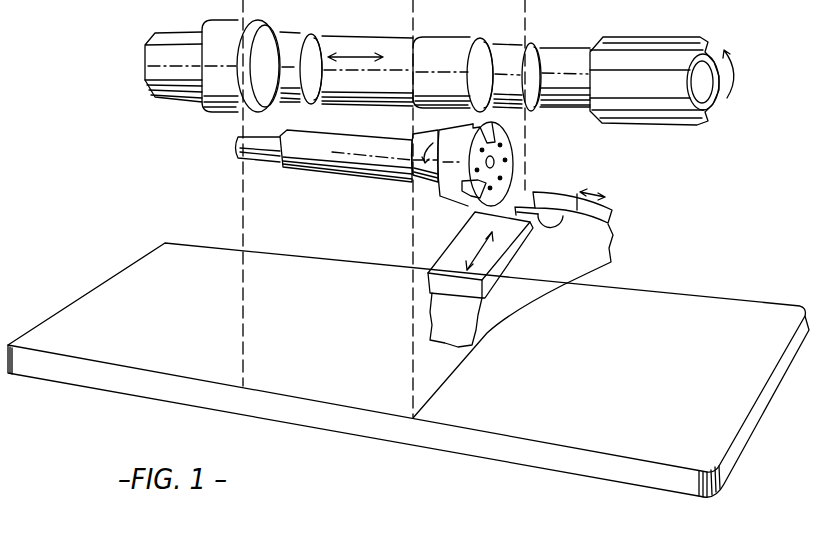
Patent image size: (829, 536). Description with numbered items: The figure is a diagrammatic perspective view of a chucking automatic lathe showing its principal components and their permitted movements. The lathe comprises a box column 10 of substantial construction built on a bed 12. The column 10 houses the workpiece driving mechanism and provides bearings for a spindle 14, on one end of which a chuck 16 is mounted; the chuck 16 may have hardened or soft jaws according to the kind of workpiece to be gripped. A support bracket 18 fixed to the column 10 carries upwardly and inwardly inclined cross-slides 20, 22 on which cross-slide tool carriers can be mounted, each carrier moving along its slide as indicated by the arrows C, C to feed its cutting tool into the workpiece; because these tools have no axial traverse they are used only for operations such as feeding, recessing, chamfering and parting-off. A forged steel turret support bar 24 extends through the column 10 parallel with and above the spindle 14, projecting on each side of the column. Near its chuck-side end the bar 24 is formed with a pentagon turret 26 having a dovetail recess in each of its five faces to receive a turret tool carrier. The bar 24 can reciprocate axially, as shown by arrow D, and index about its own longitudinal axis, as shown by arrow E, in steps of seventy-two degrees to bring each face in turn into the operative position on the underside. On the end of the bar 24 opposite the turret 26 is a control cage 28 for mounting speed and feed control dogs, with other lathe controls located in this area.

The box column 10 is at (242, 212).
The bed 12 is at (608, 447).
The spindle 14 is at (315, 163).
The chuck 16 is at (505, 145).
The support bracket 18 is at (510, 308).
The cross-slide 20 is at (510, 253).
The cross-slide 22 is at (607, 214).
The turret support bar 24 is at (562, 60).
The pentagon turret 26 is at (657, 25).
The control cage 28 is at (157, 36).